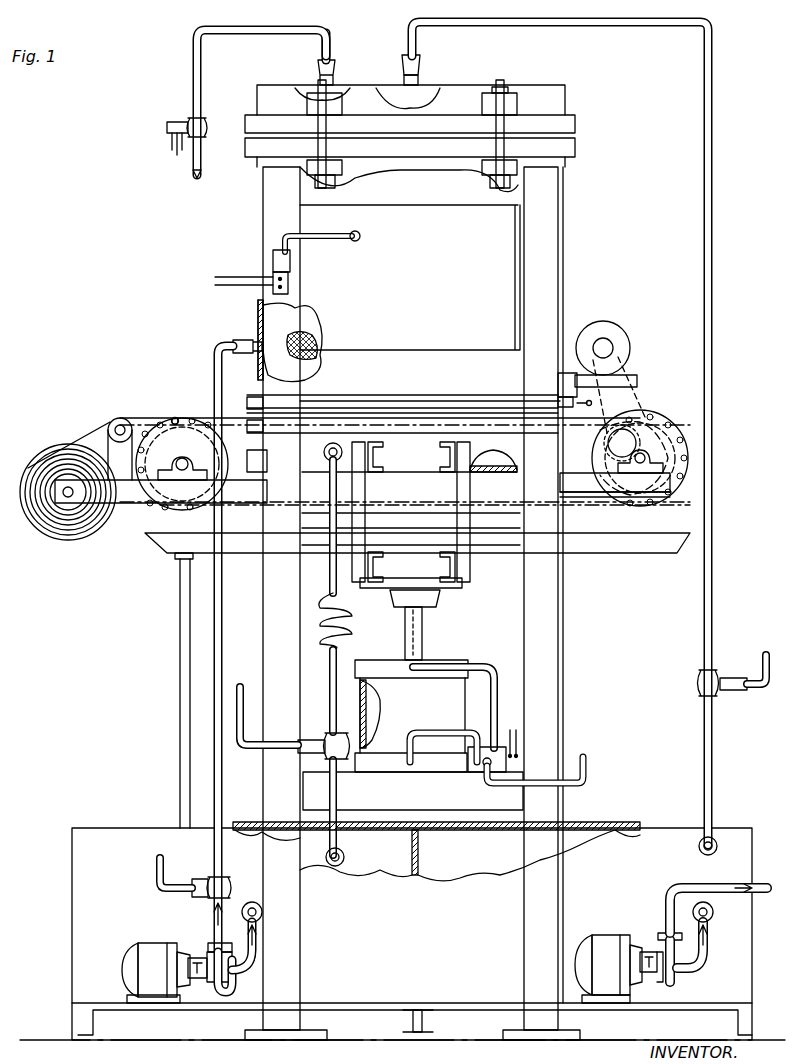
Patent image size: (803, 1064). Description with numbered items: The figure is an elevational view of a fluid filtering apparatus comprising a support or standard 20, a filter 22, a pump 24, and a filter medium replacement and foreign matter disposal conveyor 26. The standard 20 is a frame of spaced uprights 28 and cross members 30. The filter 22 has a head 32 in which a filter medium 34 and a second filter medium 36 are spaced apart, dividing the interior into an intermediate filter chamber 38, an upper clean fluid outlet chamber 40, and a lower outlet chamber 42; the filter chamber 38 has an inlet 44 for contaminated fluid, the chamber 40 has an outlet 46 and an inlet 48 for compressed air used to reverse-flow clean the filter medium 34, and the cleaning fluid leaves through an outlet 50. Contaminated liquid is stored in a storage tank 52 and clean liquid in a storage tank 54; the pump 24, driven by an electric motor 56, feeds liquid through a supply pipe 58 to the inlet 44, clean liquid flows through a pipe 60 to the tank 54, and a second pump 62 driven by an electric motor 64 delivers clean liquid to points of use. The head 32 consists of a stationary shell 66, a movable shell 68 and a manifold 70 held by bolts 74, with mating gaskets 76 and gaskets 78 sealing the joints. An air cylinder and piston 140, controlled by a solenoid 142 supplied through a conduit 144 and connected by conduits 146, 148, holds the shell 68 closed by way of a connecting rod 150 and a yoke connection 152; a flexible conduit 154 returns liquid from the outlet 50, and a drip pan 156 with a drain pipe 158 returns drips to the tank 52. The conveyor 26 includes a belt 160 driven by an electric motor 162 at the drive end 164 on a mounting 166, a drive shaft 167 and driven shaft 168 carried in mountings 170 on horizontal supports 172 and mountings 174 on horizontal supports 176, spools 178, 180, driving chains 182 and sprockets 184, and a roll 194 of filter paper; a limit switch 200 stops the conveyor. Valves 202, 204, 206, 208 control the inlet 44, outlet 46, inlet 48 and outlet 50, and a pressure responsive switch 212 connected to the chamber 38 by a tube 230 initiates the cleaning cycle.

The support or standard 20 is at (518, 932).
The filter 22 is at (600, 163).
The pump 24 is at (228, 985).
The conveyor 26 is at (690, 388).
The uprights 28 is at (272, 619).
The cross members 30 is at (462, 205).
The head 32 is at (567, 254).
The filter medium 34 is at (316, 334).
The second filter medium 36 is at (372, 400).
The filter chamber 38 is at (282, 322).
The clean fluid outlet chamber 40 is at (402, 85).
The lower outlet chamber 42 is at (490, 472).
The inlet 44 is at (246, 340).
The outlet 46 is at (422, 86).
The inlet 48 is at (318, 80).
The outlet 50 is at (330, 462).
The storage tank 52 is at (392, 870).
The storage tank 54 is at (462, 878).
The electric motor 56 is at (165, 943).
The supply pipe 58 is at (212, 372).
The pipe 60 is at (420, 30).
The second pump 62 is at (682, 970).
The electric motor 64 is at (608, 935).
The shell 66 is at (520, 288).
The shell 68 is at (420, 466).
The manifold 70 is at (565, 95).
The bolts 74 is at (307, 107).
The gaskets 76 is at (406, 136).
The gaskets 78 is at (452, 408).
The air cylinder and piston 140 is at (452, 660).
The solenoid 142 is at (470, 760).
The conduit 144 is at (588, 775).
The conduit 146 is at (498, 682).
The conduit 148 is at (433, 733).
The connecting rod 150 is at (422, 632).
The yoke connection 152 is at (462, 583).
The flexible conduit 154 is at (330, 576).
The drip pan 156 is at (638, 540).
The drain pipe 158 is at (180, 722).
The belt 160 is at (188, 512).
The electric motor 162 is at (612, 340).
The feed or drive end 164 is at (688, 440).
The mounting 166 is at (636, 375).
The drive shaft 167 is at (622, 468).
The driven shaft 168 is at (180, 472).
The mountings 170 is at (628, 458).
The horizontal supports 172 is at (608, 500).
The mountings 174 is at (190, 456).
The horizontal supports 176 is at (125, 507).
The spool 178 is at (604, 438).
The spool 180 is at (238, 462).
The driving chains 182 is at (175, 418).
The sprockets 184 is at (160, 418).
The roll of filter paper 194 is at (60, 538).
The limit switch 200 is at (560, 400).
The valve 202 is at (228, 886).
The valve 204 is at (712, 672).
The valve 206 is at (202, 126).
The valve 208 is at (352, 742).
The pressure responsive switch 212 is at (273, 260).
The tube 230 is at (285, 236).